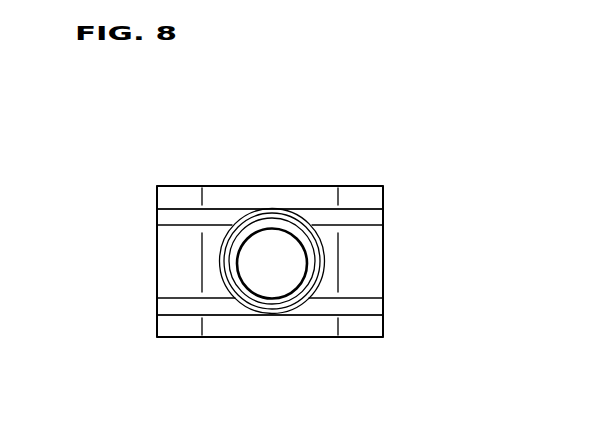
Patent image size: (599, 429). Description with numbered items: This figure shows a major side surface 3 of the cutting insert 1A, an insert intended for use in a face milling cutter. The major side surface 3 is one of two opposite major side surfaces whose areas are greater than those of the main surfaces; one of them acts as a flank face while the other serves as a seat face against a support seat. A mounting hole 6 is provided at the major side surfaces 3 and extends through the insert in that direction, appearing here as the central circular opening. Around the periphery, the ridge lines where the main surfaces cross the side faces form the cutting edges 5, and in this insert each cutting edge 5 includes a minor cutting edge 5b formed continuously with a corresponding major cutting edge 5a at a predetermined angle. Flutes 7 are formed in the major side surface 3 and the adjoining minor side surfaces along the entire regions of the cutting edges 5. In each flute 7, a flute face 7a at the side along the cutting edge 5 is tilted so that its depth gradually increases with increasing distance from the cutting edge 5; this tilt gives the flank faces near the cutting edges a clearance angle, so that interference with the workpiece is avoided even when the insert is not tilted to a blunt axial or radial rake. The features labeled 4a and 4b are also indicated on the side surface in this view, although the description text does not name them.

The cutting insert 1A is at (396, 242).
The major side surface 3 is at (213, 290).
The side surface 4a is at (157, 245).
The front surface 4b is at (168, 268).
The cutting edge 5 is at (237, 115).
The major cutting edge 5a is at (228, 186).
The minor cutting edge 5b is at (177, 186).
The mounting hole 6 is at (273, 247).
The flute 7 is at (352, 210).
The flute face 7a is at (157, 198).